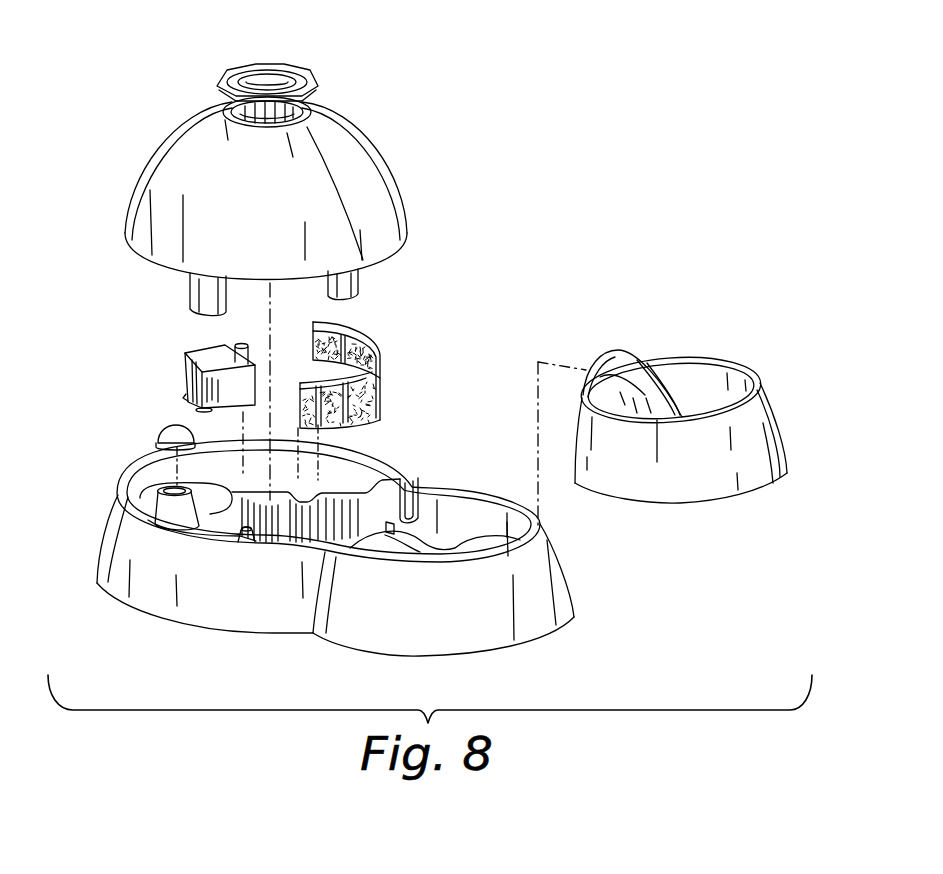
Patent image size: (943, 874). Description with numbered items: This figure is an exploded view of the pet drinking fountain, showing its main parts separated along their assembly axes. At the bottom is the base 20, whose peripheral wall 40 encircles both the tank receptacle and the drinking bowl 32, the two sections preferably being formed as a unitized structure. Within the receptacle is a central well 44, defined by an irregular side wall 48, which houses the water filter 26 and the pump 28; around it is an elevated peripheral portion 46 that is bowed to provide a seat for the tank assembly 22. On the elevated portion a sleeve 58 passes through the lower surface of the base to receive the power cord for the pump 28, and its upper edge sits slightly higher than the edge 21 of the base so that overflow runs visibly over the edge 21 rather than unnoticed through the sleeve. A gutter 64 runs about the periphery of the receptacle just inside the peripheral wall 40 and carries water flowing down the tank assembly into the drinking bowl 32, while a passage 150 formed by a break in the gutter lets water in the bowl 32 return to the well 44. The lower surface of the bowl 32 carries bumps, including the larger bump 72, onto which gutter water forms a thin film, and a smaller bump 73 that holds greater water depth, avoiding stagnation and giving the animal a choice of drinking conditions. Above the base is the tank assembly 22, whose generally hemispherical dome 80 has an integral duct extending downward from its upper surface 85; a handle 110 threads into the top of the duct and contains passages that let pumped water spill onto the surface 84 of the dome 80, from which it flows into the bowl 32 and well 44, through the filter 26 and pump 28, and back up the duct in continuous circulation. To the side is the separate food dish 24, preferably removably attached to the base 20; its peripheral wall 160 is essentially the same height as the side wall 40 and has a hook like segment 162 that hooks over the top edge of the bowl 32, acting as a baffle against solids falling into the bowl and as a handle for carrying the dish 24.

The base 20 is at (548, 648).
The edge 21 is at (122, 485).
The tank assembly 22 is at (418, 193).
The food dish 24 is at (713, 355).
The filter 26 is at (370, 338).
The pump 28 is at (185, 375).
The drinking bowl 32 is at (576, 584).
The peripheral wall 40 is at (100, 542).
The central well 44 is at (237, 500).
The elevated peripheral portion 46 is at (294, 481).
The irregular side wall 48 is at (363, 510).
The sleeve 58 is at (165, 508).
The gutter 64 is at (398, 512).
The bump 72 is at (405, 548).
The bump 73 is at (536, 519).
The dome 80 is at (384, 153).
The surface of the dome 84 is at (163, 143).
The upper surface 85 is at (312, 106).
The handle 110 is at (235, 70).
The passage 150 is at (393, 529).
The peripheral wall 160 is at (770, 407).
The hook like segment 162 is at (620, 357).